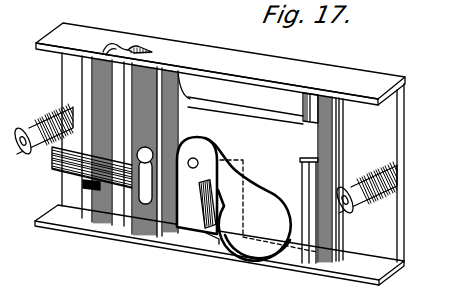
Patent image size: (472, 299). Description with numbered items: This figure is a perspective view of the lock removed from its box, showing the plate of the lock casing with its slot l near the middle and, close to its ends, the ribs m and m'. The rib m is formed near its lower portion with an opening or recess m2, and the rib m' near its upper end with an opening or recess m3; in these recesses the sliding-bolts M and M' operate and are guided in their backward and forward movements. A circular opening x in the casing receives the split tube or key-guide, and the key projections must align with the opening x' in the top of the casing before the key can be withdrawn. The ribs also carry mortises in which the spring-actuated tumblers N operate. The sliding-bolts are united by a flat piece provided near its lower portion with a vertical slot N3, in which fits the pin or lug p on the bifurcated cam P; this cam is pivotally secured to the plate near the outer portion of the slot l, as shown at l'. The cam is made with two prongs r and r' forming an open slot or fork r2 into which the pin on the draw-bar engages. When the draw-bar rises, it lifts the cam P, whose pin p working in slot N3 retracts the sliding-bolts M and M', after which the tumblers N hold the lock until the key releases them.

The circular opening x is at (115, 31).
The opening in top of casing x' is at (220, 58).
The rib m is at (77, 139).
The spring-actuated tumbler N is at (162, 238).
The vertical slot N3 is at (109, 223).
The sliding-bolt M is at (204, 159).
The opening or recess m2 is at (82, 186).
The pin or lug p is at (136, 150).
The sliding-bolt M' is at (248, 105).
The opening or recess m3 is at (316, 160).
The rib m' is at (347, 178).
The slot l is at (265, 187).
The pivot of cam l' is at (231, 166).
The bifurcated cam P is at (234, 199).
The prong r is at (190, 224).
The open slot or fork r2 is at (216, 238).
The prong r' is at (257, 254).